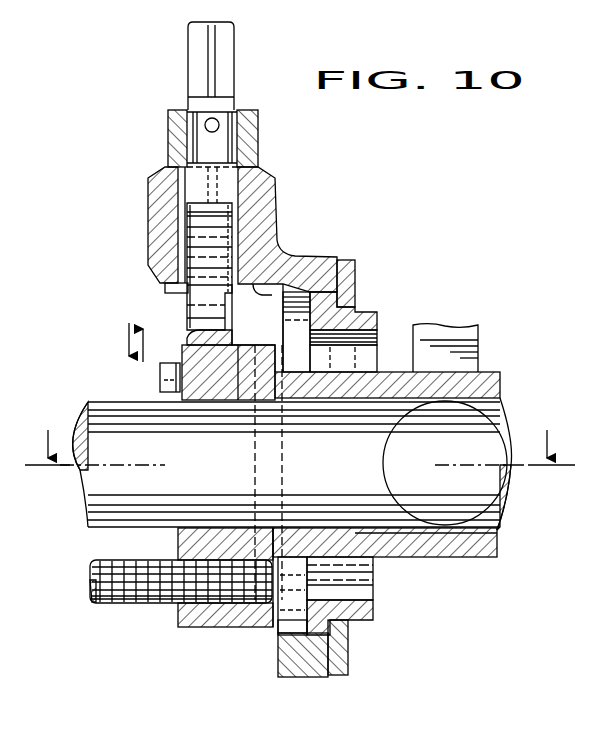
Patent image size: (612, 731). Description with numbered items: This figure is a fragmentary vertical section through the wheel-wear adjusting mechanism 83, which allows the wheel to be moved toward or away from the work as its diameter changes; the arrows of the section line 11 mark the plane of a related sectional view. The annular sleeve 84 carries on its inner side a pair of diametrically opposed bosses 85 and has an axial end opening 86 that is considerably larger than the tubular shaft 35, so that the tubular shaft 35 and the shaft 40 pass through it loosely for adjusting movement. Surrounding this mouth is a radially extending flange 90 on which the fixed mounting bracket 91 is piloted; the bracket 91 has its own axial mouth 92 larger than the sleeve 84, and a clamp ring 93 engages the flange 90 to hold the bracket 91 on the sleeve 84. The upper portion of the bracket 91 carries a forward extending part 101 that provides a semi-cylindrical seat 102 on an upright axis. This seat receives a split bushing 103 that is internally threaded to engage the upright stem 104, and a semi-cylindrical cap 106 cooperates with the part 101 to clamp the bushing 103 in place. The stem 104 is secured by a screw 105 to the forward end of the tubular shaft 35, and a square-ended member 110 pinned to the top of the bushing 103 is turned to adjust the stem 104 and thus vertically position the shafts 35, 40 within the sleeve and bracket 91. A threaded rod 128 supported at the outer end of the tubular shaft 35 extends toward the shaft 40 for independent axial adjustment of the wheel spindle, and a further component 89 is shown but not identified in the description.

The section line 11- 11 is at (298, 447).
The tubular shaft 35 is at (455, 556).
The shaft 40 is at (93, 507).
The adjusting mechanism 83 is at (213, 627).
The sleeve 84 is at (355, 621).
The bosses 85 is at (377, 318).
The axial end opening 86 is at (370, 578).
The gear 89 is at (470, 345).
The flange 90 is at (318, 636).
The mounting bracket 91 is at (300, 260).
The axial mouth 92 is at (280, 626).
The clamp ring 93 is at (347, 275).
The forward extending part 101 is at (273, 203).
The semi-cylindrical seat 102 is at (245, 248).
The split bushing 103 is at (240, 286).
The upright stem 104 is at (192, 316).
The screw 105 is at (160, 378).
The semi-cylindrical cap 106 is at (156, 220).
The square-ended member 110 is at (228, 78).
The threaded rod 128 is at (152, 588).